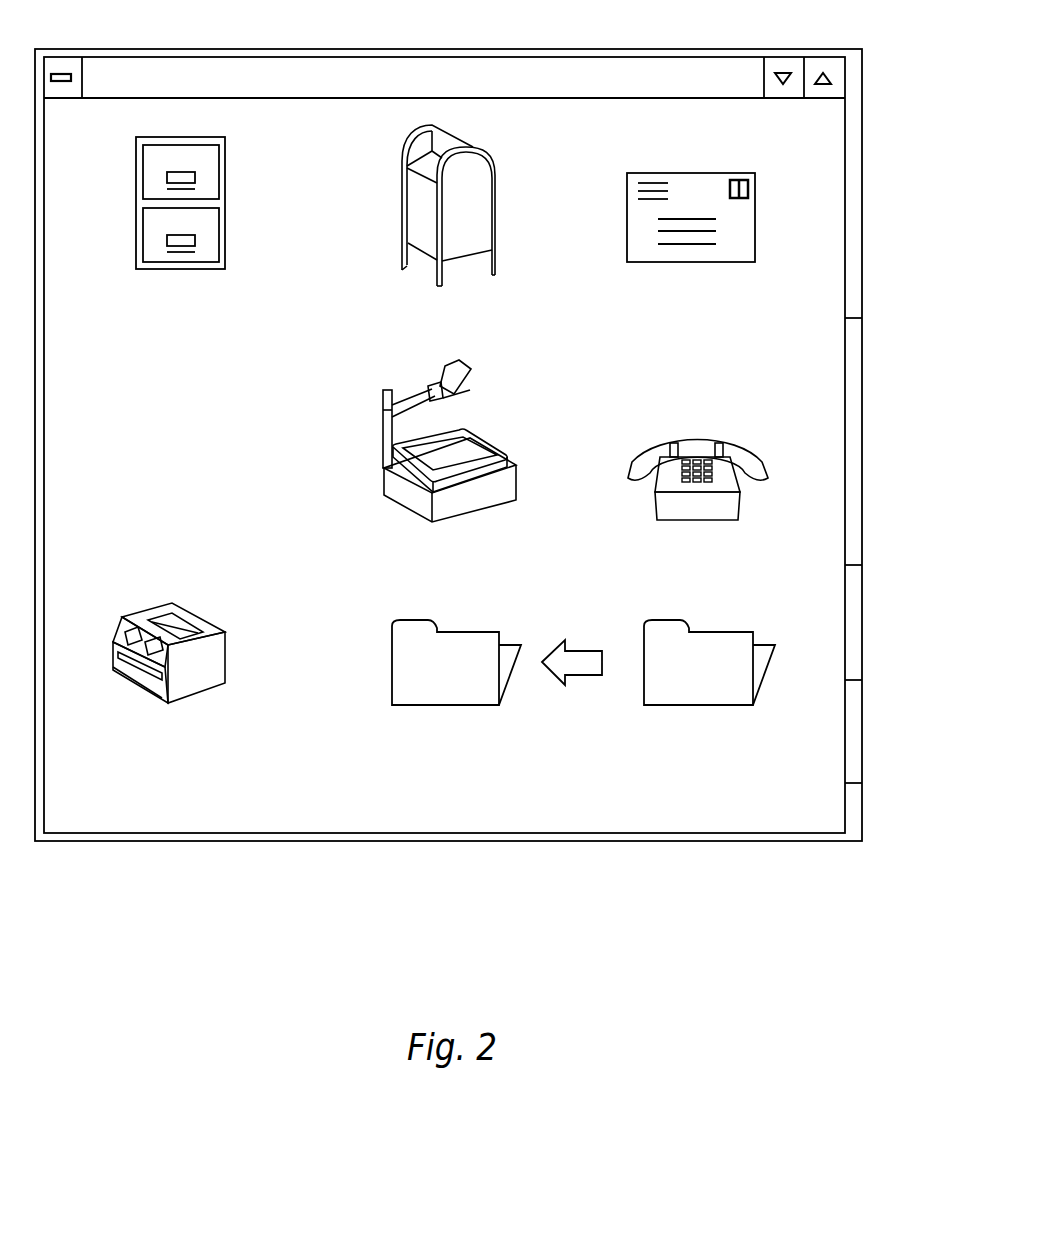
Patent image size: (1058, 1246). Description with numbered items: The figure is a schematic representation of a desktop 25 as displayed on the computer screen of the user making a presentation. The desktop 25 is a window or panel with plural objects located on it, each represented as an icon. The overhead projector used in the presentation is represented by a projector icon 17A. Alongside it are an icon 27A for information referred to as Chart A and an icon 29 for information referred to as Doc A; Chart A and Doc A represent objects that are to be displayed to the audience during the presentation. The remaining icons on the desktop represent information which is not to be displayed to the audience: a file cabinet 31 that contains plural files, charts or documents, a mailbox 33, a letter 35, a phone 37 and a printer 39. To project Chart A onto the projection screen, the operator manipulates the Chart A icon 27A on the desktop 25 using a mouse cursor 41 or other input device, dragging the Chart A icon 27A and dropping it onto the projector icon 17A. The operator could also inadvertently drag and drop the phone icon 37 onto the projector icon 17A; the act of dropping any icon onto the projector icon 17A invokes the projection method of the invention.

The desktop 25 is at (657, 50).
The file cabinet 31 is at (226, 201).
The mailbox 33 is at (497, 199).
The letter 35 is at (757, 213).
The projector icon 17A is at (503, 447).
The phone 37 is at (738, 441).
The printer 39 is at (197, 615).
The mouse cursor 41 is at (582, 650).
The Chart A icon 27A is at (392, 655).
The Doc A icon 29 is at (720, 632).